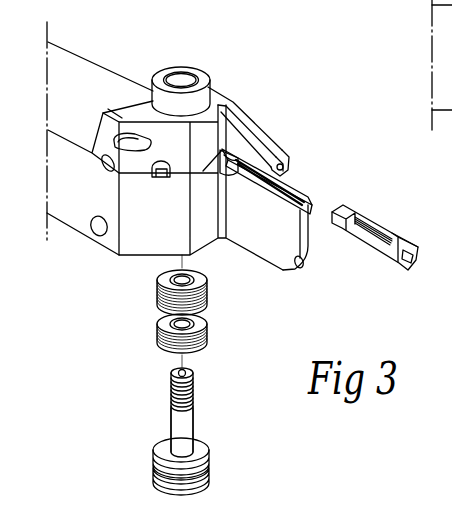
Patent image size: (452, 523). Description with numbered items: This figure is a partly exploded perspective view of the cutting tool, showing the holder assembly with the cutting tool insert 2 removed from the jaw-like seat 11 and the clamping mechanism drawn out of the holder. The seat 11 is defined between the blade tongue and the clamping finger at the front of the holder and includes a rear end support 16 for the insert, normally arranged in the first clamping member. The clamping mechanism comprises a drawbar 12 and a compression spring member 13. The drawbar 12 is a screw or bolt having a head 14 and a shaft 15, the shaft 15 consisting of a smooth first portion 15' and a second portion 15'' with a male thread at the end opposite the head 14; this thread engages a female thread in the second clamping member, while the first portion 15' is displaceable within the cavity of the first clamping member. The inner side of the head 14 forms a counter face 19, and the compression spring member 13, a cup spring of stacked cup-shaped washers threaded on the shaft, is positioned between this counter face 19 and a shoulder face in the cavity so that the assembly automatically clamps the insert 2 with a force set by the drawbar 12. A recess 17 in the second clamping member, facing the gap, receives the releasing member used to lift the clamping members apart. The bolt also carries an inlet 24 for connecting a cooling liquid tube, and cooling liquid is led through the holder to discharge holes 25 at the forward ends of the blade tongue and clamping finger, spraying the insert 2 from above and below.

The cutting tool insert 2 is at (381, 250).
The jaw-like seat 11 is at (294, 184).
The drawbar 12 is at (138, 364).
The compression spring member 13 is at (157, 301).
The head 14 is at (203, 488).
The shaft 15 is at (142, 412).
The smooth first portion 15' is at (215, 432).
The second portion with male thread 15'' is at (215, 385).
The rear end support 16 is at (232, 170).
The recess 17 is at (158, 176).
The counter face 19 is at (200, 450).
The inlet 24 is at (182, 76).
The discharge holes 25 is at (285, 166).